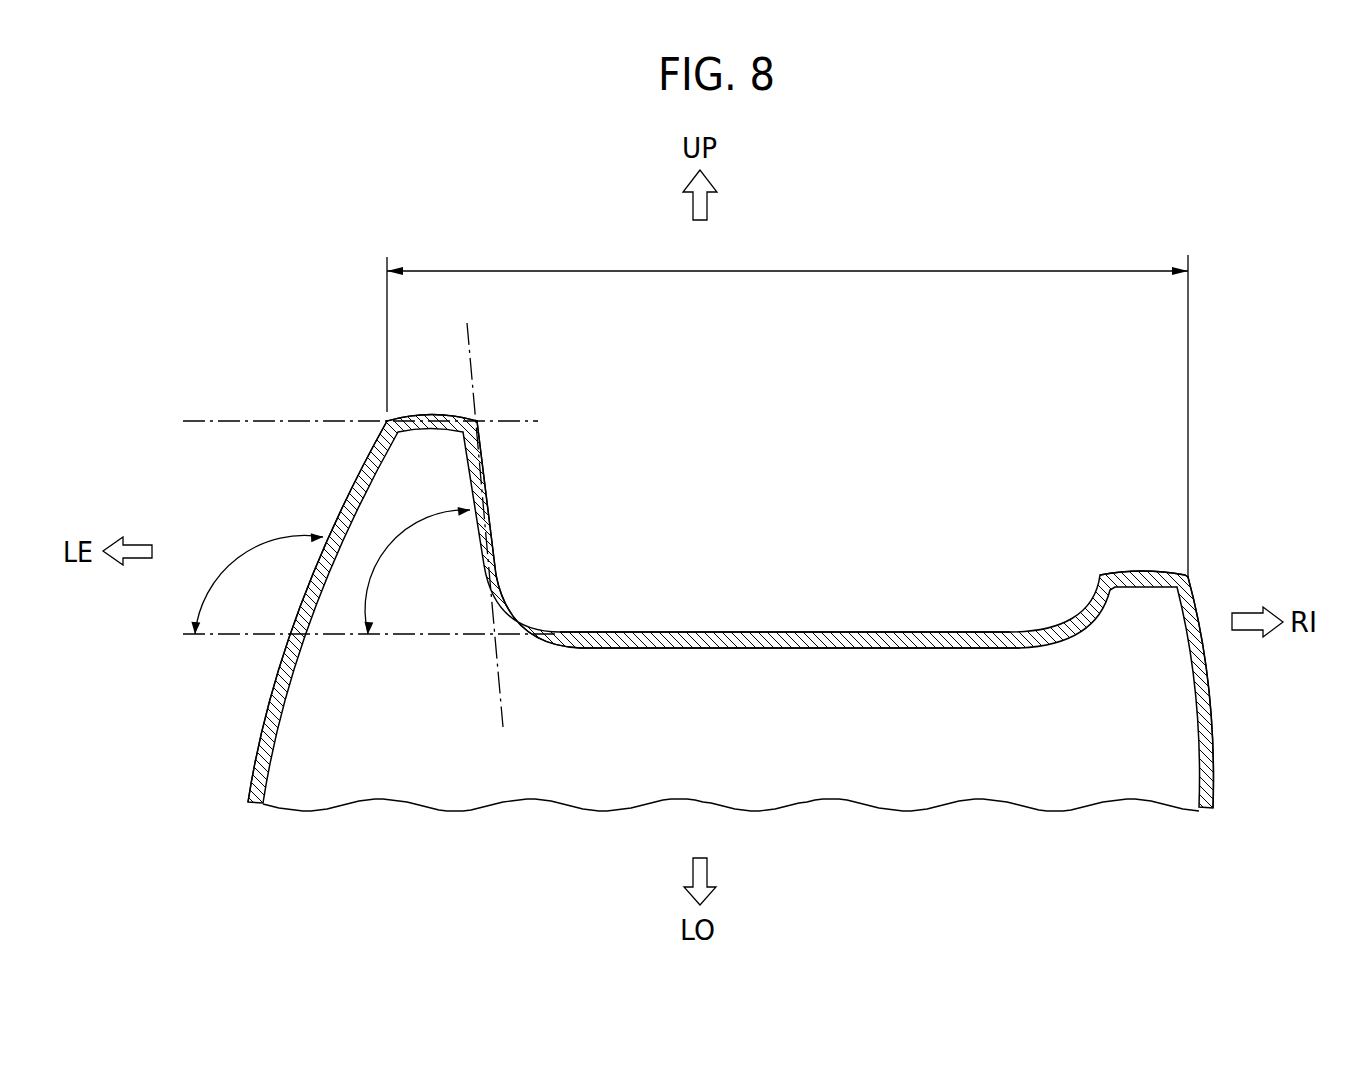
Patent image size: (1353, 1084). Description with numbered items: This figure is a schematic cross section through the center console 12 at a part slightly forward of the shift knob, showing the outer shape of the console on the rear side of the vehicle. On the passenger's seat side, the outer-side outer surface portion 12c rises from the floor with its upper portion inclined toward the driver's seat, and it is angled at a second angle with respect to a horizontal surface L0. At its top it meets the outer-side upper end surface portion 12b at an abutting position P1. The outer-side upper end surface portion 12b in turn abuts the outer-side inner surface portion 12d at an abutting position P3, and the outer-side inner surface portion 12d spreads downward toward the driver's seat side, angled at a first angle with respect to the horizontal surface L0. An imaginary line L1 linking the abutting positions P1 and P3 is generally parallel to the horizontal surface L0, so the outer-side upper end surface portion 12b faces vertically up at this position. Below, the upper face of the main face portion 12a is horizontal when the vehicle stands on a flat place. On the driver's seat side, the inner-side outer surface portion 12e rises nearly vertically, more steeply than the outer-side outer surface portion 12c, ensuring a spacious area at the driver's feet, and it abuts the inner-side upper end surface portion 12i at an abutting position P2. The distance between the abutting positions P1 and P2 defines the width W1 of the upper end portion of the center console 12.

The center console 12 is at (562, 627).
The main face portion 12a is at (792, 628).
The outer-side upper end surface portion 12b is at (428, 408).
The outer-side outer surface portion 12c is at (327, 528).
The outer-side inner surface portion 12d is at (497, 545).
The inner-side outer surface portion 12e is at (1217, 678).
The inner-side upper end surface portion 12i is at (1143, 565).
The abutting position P1 is at (383, 417).
The abutting position P2 is at (1197, 578).
The abutting position P3 is at (480, 413).
The horizontal surface L0 is at (233, 643).
The imaginary line L1 is at (233, 417).
The width W1 is at (787, 406).